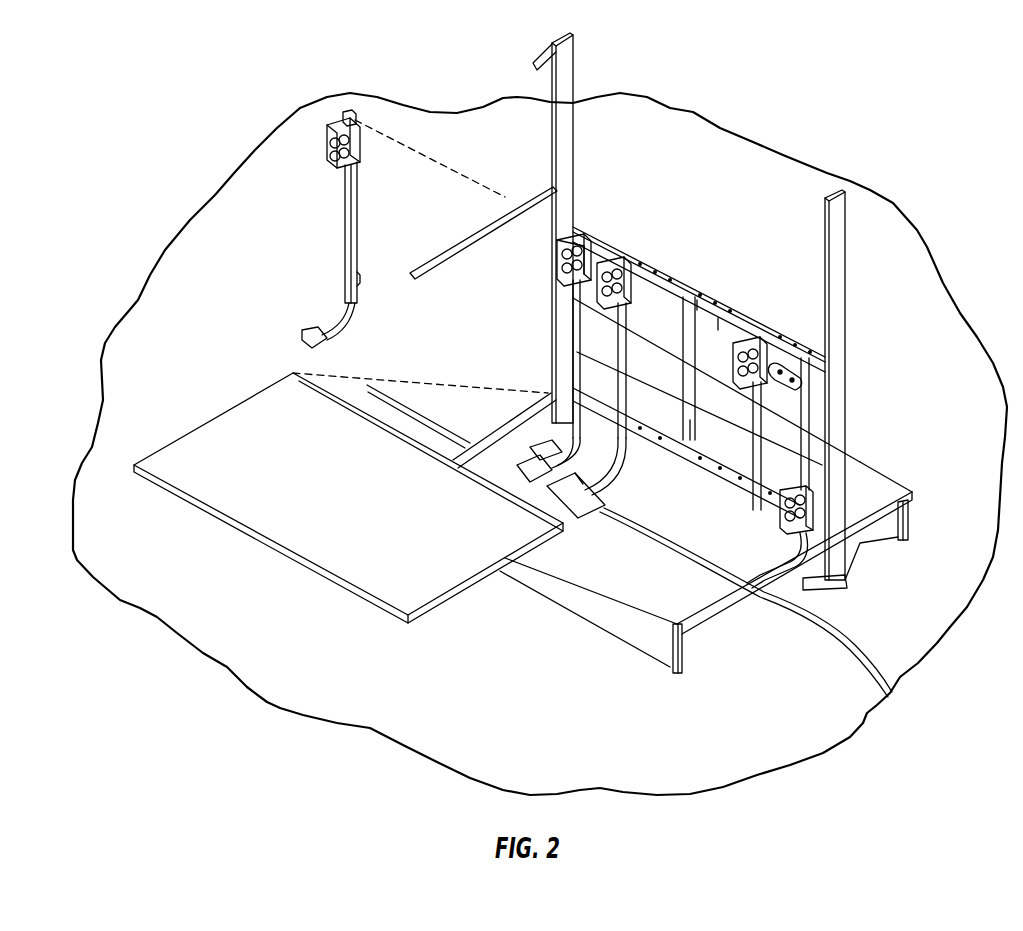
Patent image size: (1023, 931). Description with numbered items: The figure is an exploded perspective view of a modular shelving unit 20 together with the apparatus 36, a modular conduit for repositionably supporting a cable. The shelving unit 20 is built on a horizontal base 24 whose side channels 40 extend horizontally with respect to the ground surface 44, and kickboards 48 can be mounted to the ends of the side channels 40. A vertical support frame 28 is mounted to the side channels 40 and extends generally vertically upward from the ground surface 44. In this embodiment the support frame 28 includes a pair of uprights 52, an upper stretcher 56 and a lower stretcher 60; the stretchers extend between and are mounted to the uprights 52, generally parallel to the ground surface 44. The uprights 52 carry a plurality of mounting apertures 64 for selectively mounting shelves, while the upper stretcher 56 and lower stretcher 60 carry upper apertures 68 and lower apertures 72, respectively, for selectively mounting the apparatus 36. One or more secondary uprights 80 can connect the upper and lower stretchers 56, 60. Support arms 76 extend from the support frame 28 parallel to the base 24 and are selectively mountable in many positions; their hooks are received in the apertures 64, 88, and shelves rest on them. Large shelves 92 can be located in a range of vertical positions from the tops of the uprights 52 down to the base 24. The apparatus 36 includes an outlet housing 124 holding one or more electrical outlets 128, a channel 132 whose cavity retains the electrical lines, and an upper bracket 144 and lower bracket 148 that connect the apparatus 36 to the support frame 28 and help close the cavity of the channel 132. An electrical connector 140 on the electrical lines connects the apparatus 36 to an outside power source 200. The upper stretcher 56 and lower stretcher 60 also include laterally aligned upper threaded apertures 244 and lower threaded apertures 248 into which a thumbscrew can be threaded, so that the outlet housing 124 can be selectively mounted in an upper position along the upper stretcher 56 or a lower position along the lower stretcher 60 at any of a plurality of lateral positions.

The modular shelving unit 20 is at (838, 86).
The horizontal base 24 is at (715, 654).
The vertical support frame 28 is at (856, 310).
The apparatus or modular conduit 36 is at (578, 224).
The side channels 40 is at (505, 433).
The ground surface 44 is at (916, 246).
The kickboards 48 is at (605, 626).
The uprights 52 is at (567, 152).
The upper stretcher 56 is at (645, 266).
The lower stretcher 60 is at (676, 449).
The mounting apertures 64 is at (557, 262).
The upper apertures 68 is at (718, 323).
The lower apertures 72 is at (690, 415).
The support arms 76 is at (500, 222).
The secondary uprights 80 is at (680, 314).
The apertures 88 is at (690, 400).
The large shelves 92 is at (220, 425).
The outlet housing 124 is at (360, 152).
The electrical outlets 128 is at (325, 148).
The channel 132 is at (345, 220).
The electrical connector 140 is at (302, 327).
The upper bracket 144 is at (352, 113).
The lower bracket 148 is at (360, 277).
The power source 200 is at (825, 642).
The upper threaded apertures 244 is at (800, 345).
The lower threaded apertures 248 is at (600, 425).